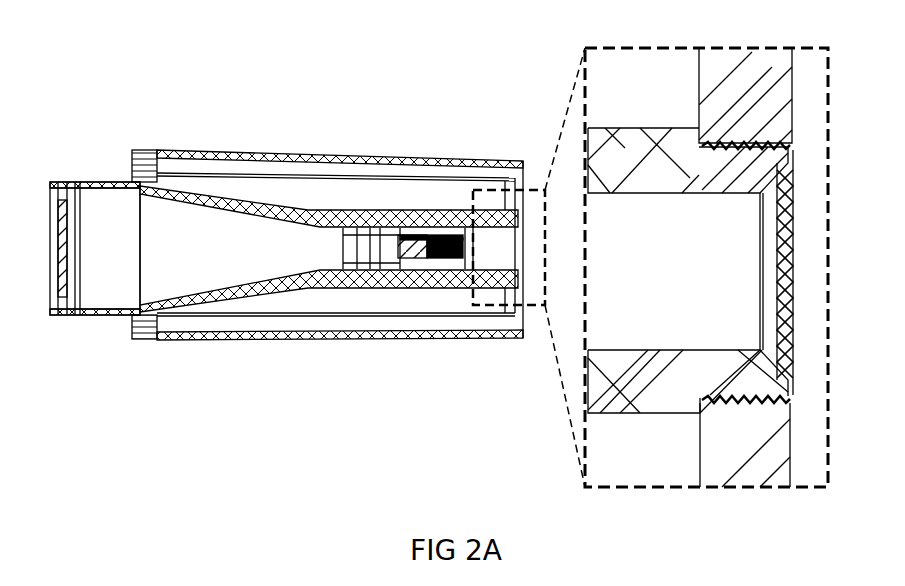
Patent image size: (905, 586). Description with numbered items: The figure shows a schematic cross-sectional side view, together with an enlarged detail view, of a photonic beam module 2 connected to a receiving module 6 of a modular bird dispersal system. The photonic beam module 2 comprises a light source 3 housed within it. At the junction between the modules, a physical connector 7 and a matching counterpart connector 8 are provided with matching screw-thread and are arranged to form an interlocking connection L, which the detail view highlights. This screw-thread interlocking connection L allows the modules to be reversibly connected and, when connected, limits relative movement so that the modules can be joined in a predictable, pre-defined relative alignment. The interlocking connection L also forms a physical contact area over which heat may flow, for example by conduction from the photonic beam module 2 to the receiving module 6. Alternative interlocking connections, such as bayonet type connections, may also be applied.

The photonic beam module 2 is at (189, 192).
The light source 3 is at (425, 248).
The receiving module 6 is at (377, 138).
The physical connector 7 is at (742, 123).
The matching counterpart connector 8 is at (708, 177).
The interlocking connection L is at (800, 146).